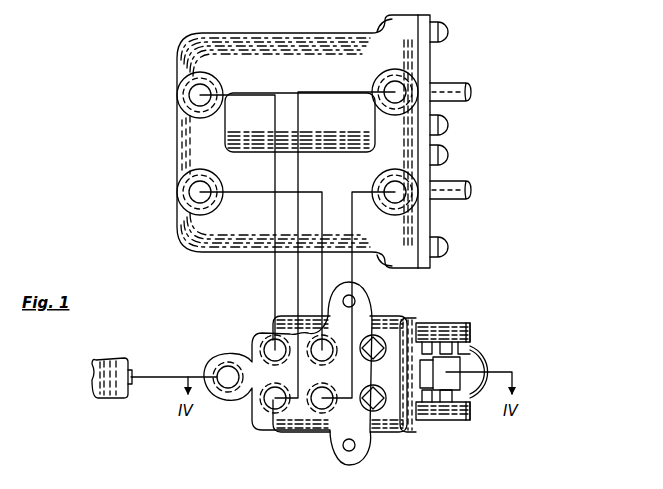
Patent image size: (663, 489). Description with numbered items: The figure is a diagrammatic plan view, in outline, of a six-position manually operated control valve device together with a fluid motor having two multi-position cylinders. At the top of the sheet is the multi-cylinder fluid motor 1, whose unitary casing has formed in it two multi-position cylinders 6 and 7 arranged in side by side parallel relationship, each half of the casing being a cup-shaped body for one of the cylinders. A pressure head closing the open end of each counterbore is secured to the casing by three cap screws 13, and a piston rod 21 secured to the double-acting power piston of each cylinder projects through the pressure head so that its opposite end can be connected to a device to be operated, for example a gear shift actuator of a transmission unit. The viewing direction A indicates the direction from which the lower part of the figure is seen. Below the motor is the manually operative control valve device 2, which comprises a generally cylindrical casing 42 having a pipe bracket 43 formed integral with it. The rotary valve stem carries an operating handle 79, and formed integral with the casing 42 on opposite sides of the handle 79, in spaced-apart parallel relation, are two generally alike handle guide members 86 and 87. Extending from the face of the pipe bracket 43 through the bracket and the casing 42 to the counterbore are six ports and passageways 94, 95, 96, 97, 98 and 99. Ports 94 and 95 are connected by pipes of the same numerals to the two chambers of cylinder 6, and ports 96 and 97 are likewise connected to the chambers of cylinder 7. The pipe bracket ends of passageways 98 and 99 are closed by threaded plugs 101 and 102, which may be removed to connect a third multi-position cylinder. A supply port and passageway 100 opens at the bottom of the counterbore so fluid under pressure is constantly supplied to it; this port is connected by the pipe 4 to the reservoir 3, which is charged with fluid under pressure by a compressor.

The multi-cylinder fluid motor 1 is at (176, 143).
The manually operative control valve device 2 is at (286, 432).
The reservoir 3 is at (110, 402).
The pipe 4 is at (148, 377).
The multi-position cylinder 6 is at (264, 32).
The multi-position cylinder 7 is at (262, 254).
The cap screws 13 is at (450, 32).
The piston rod 21 is at (456, 88).
The casing 42 is at (406, 435).
The pipe bracket 43 is at (338, 448).
The operating handle 79 is at (468, 350).
The handle guide member 86 is at (458, 412).
The handle guide member 87 is at (460, 330).
The port and passageway 94 is at (238, 94).
The port and passageway 95 is at (372, 98).
The port and passageway 96 is at (226, 182).
The port and passageway 97 is at (372, 180).
The port and passageway 98 is at (376, 336).
The port and passageway 99 is at (378, 412).
The supply port and passageway 100 is at (226, 366).
The threaded plug 101 is at (422, 330).
The threaded plug 102 is at (418, 418).
The viewing direction A is at (556, 141).